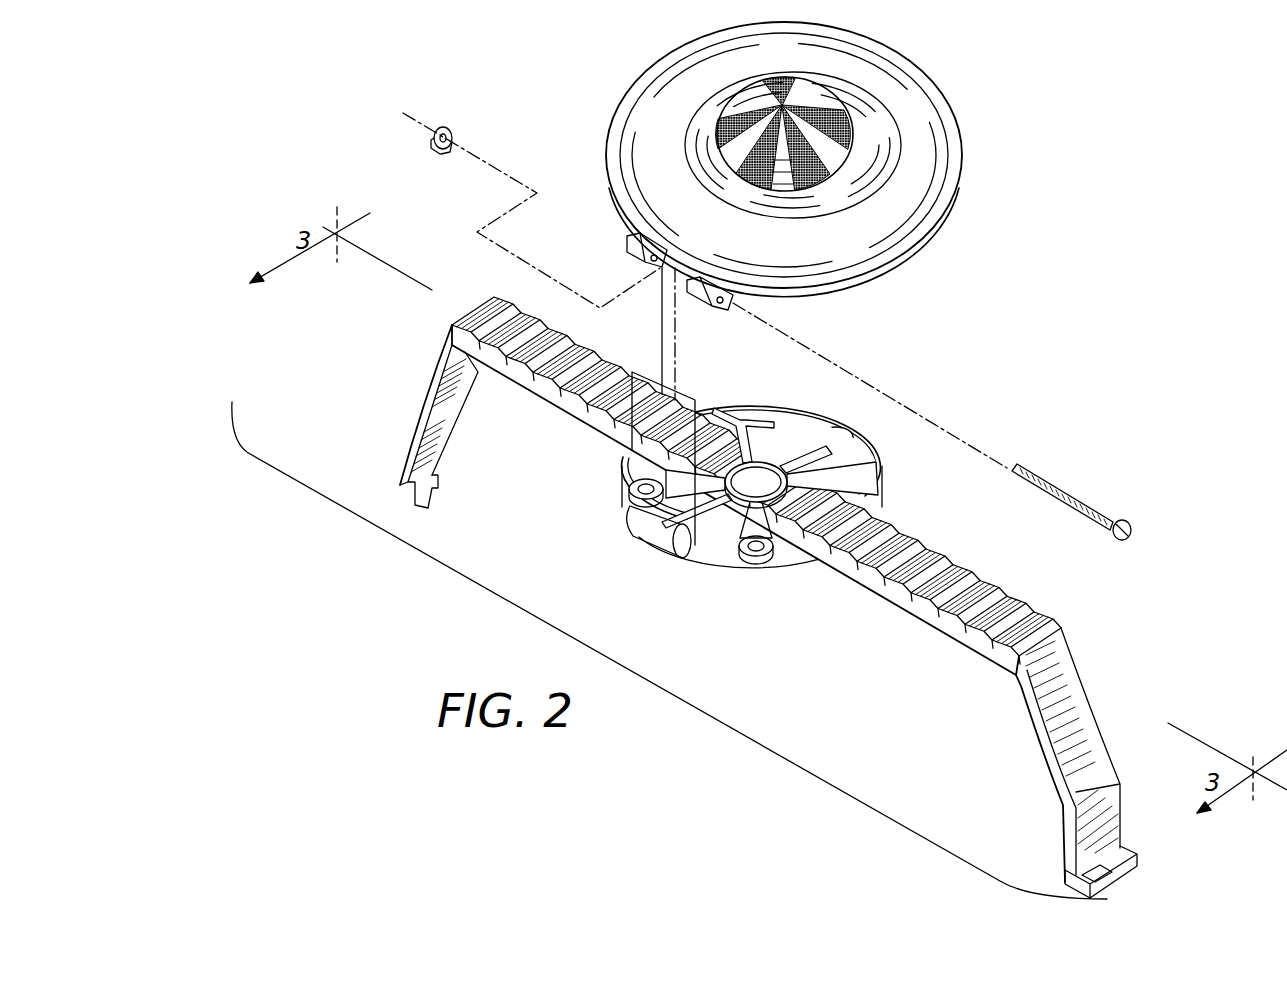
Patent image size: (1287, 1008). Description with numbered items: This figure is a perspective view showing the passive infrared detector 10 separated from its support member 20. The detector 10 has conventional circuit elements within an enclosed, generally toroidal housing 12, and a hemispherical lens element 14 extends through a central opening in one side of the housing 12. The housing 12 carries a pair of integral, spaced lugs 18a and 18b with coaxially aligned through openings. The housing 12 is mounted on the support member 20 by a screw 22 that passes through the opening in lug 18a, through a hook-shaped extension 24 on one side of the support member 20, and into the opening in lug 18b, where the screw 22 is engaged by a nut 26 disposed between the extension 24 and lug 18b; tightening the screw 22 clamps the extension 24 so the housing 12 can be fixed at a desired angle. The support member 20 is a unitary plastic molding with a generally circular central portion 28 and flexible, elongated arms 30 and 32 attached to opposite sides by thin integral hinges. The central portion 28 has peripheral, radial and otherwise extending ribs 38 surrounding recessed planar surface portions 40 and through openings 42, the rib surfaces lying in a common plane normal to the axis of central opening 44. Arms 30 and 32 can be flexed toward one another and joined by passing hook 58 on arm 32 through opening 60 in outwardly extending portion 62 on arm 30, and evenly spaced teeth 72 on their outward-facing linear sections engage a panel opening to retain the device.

The passive infrared (PIR) detector 10 is at (1000, 198).
The housing 12 is at (893, 82).
The hemispherical lens element 14 is at (727, 147).
The lug 18a is at (700, 292).
The lug 18b is at (628, 250).
The support member 20 is at (607, 487).
The screw 22 is at (1102, 510).
The hook-shaped extension 24 is at (645, 528).
The nut 26 is at (447, 128).
The central portion 28 is at (737, 563).
The arm 30 is at (442, 413).
The arm 32 is at (1045, 700).
The ribs 38 is at (817, 417).
The recessed planar surface portions 40 is at (757, 420).
The through openings 42 is at (842, 417).
The central opening 44 is at (694, 508).
The hook 58 is at (432, 494).
The opening 60 is at (1095, 860).
The outwardly extending portion 62 is at (1132, 848).
The teeth 72 is at (972, 582).